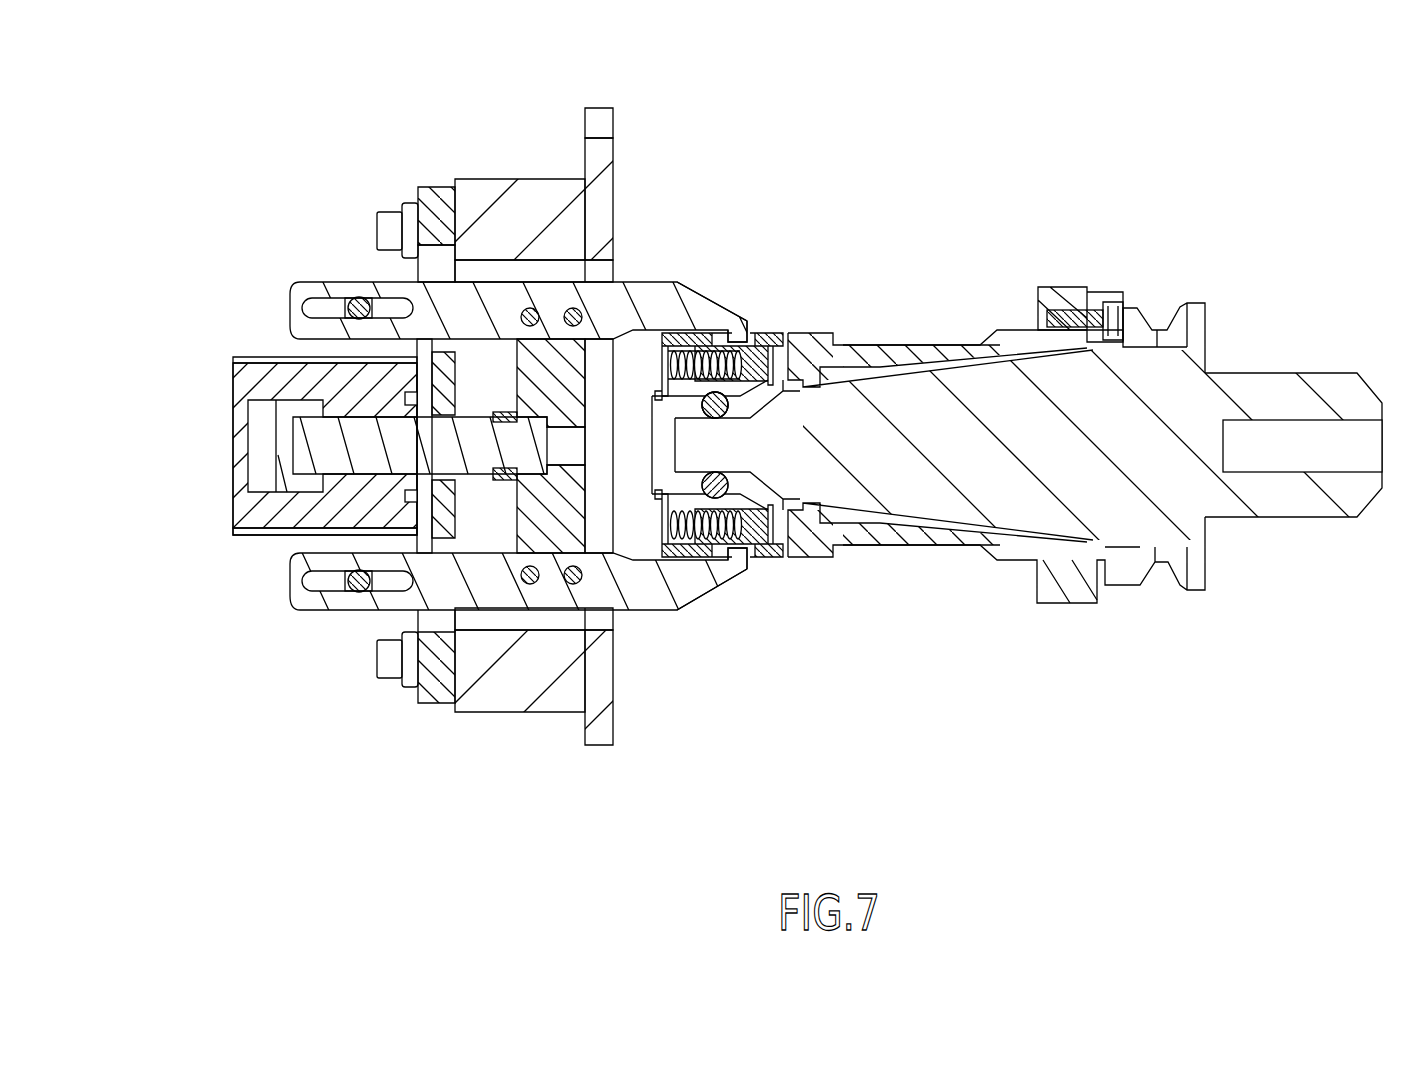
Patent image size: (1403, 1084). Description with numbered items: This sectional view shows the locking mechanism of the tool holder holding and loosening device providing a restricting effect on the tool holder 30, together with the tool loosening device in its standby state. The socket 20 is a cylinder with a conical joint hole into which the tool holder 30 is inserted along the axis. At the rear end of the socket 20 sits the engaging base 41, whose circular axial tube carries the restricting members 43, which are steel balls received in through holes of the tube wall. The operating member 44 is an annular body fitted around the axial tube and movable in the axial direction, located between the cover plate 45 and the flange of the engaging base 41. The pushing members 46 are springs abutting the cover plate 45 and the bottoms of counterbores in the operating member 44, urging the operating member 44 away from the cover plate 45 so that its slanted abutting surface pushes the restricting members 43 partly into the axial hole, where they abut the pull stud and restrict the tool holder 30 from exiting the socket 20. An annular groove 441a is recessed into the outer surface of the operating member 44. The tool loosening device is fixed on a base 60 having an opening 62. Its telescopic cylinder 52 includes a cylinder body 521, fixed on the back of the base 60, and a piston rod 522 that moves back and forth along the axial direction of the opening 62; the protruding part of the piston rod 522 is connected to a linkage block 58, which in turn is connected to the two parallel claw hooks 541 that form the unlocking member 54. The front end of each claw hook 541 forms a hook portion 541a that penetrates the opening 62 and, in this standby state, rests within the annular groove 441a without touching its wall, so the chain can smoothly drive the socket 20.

The socket 20 is at (979, 338).
The tool holder 30 is at (1278, 370).
The engaging base 41 is at (802, 359).
The restricting members 43 is at (742, 556).
The operating member 44 is at (792, 326).
The annular groove 441a is at (703, 338).
The cover plate 45 is at (663, 370).
The pushing members 46 is at (723, 337).
The telescopic cylinder 52 is at (232, 379).
The cylinder body 521 is at (250, 518).
The piston rod 522 is at (480, 430).
The unlocking member 54 is at (288, 292).
The claw hooks 541 is at (656, 290).
The hook portion 541a is at (757, 337).
The linkage block 58 is at (553, 540).
The base 60 is at (617, 728).
The opening 62 is at (608, 622).